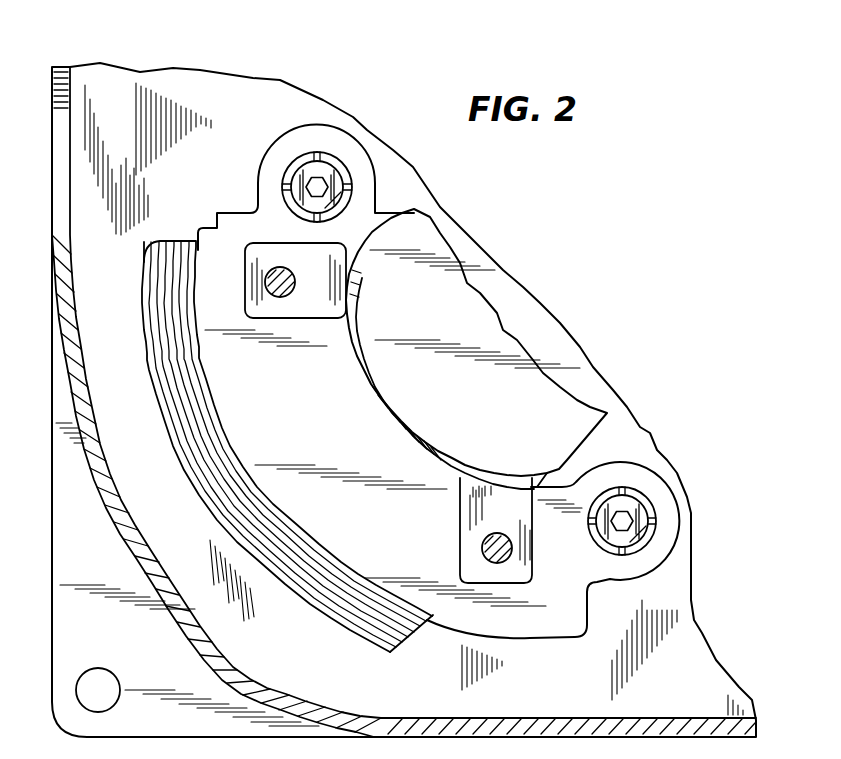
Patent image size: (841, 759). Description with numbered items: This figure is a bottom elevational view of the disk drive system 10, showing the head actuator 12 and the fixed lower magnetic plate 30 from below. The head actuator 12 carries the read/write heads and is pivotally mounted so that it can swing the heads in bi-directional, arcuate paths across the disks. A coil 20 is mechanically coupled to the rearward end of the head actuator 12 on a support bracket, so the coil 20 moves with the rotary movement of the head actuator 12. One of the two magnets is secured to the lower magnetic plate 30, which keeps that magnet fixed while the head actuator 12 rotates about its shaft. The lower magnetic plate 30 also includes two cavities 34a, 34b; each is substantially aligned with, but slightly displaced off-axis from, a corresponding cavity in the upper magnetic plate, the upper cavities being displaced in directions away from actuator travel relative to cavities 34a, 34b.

The disk drive system 10 is at (45, 63).
The head actuator 12 is at (627, 437).
The coil 20 is at (163, 240).
The lower magnetic plate 30 is at (338, 446).
The cavity 34a is at (294, 162).
The cavity 34b is at (654, 510).